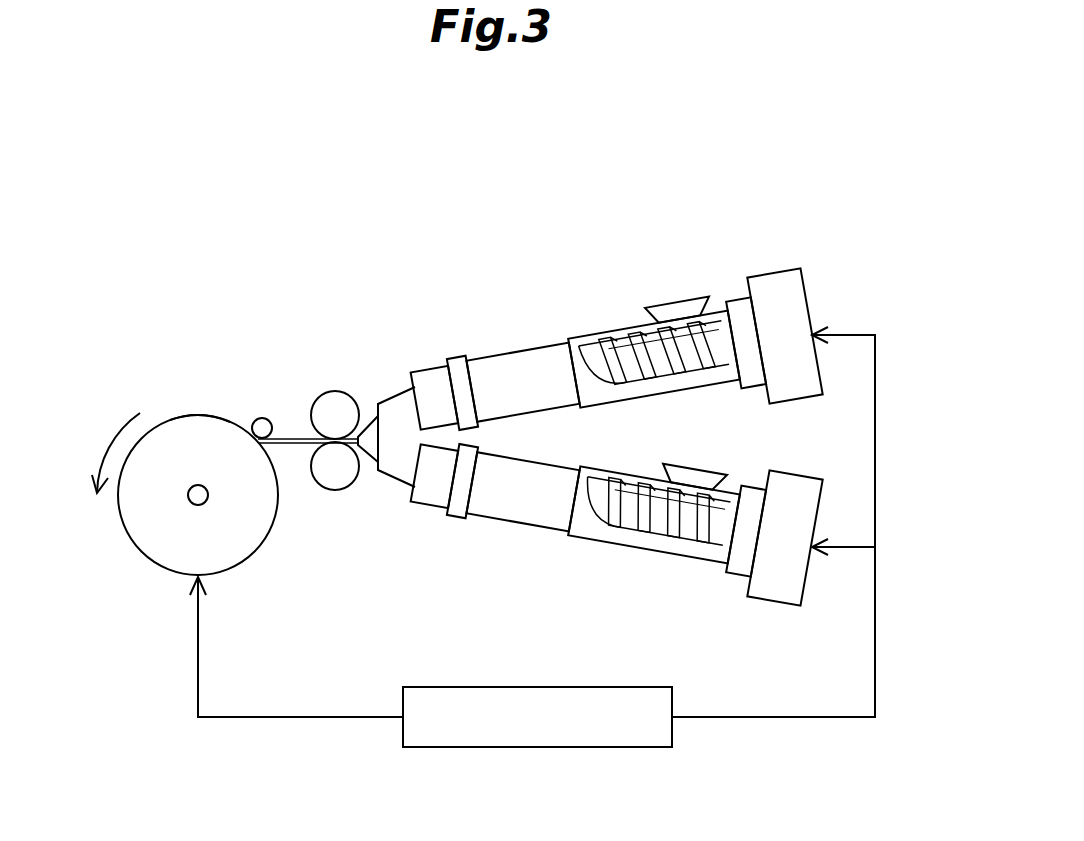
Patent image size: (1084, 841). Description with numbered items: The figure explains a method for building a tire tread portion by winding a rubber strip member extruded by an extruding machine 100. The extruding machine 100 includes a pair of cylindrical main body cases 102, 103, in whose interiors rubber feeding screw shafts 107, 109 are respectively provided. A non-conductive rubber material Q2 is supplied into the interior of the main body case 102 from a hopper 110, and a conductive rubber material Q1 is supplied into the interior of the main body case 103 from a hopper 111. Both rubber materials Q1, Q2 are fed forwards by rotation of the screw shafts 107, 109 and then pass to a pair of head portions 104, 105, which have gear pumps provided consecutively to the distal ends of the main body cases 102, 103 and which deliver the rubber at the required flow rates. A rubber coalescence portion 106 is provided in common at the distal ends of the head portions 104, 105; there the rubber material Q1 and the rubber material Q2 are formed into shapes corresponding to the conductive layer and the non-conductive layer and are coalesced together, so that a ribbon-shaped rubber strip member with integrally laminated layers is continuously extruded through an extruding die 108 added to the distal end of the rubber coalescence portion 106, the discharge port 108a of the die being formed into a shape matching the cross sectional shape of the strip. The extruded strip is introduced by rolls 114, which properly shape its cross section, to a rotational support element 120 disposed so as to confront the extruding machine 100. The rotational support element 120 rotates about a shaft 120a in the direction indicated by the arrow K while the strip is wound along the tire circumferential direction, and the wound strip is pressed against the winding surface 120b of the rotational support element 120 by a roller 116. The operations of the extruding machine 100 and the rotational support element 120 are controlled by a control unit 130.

The extruding machine 100 is at (521, 183).
The main body case 102 is at (518, 378).
The main body case 103 is at (512, 495).
The head portion 104 is at (438, 388).
The head portion 105 is at (435, 480).
The rubber coalescence portion 106 is at (398, 422).
The rubber feeding screw shaft 107 is at (653, 363).
The extruding die 108 is at (370, 450).
The discharge port 108a is at (325, 413).
The rubber feeding screw shaft 109 is at (630, 510).
The hopper 110 is at (698, 300).
The hopper 111 is at (717, 470).
The rolls 114 is at (325, 480).
The roller 116 is at (263, 417).
The rotational support element 120 is at (177, 432).
The shaft 120a is at (195, 502).
The winding surface 120b is at (203, 415).
The control unit 130 is at (522, 725).
The arrow K is at (115, 453).
The conductive rubber material Q1 is at (657, 537).
The non-conductive rubber material Q2 is at (626, 345).